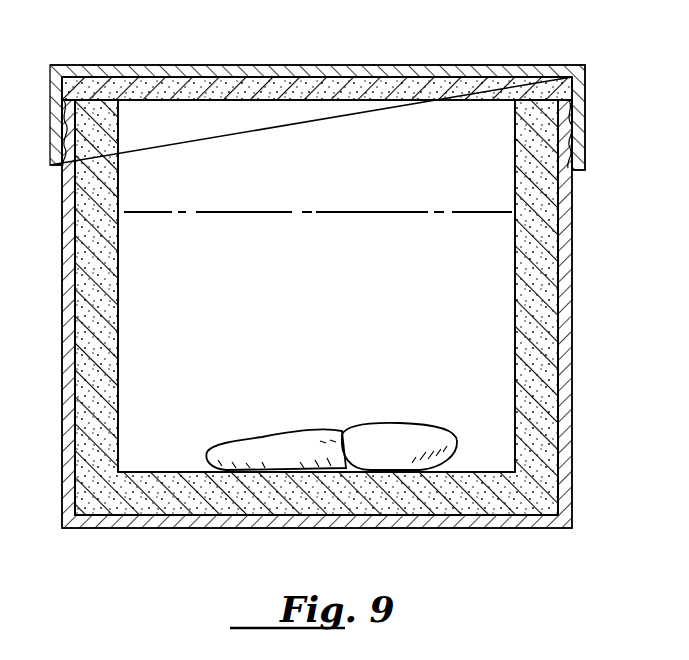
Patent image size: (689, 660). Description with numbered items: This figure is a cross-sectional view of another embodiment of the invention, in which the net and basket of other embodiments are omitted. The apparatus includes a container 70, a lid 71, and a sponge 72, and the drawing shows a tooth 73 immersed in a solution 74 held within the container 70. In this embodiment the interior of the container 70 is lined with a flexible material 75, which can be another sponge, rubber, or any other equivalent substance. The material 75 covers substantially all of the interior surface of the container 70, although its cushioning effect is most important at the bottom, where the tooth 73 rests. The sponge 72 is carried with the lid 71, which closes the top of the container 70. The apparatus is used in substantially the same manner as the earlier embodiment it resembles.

The container 70 is at (564, 328).
The lid 71 is at (400, 68).
The sponge 72 is at (380, 90).
The tooth 73 is at (371, 448).
The solution 74 is at (471, 356).
The flexible material 75 is at (103, 348).